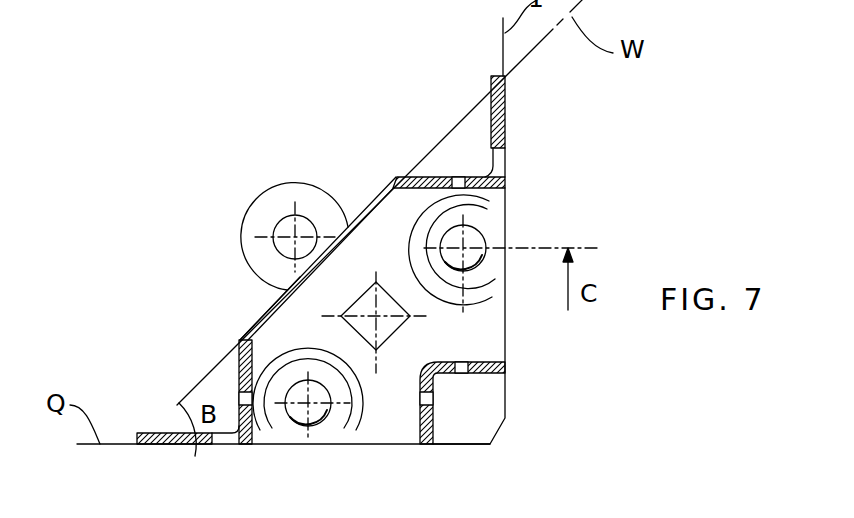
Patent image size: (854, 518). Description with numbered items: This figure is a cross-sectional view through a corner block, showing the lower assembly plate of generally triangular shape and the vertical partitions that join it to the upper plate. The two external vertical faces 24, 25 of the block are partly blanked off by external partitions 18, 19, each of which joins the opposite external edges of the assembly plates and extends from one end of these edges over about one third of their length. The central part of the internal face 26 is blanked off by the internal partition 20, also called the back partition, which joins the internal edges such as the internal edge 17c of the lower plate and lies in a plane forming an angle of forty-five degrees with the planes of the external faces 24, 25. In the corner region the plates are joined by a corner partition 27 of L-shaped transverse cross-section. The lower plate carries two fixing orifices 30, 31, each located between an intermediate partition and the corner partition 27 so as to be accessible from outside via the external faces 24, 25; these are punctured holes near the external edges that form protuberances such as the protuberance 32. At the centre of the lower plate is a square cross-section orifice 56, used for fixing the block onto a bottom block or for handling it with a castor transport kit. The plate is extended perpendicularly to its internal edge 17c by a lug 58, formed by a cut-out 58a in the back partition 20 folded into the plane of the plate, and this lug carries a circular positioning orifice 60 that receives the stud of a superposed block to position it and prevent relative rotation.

The internal edge 17c is at (455, 134).
The external partition 18 is at (157, 433).
The external partition 19 is at (505, 110).
The internal partition 20 is at (377, 200).
The external vertical face 24 is at (325, 446).
The external vertical face 25 is at (505, 228).
The internal face 26 is at (260, 323).
The corner partition 27 is at (483, 373).
The fixing orifice 30 is at (318, 387).
The fixing orifice 31 is at (462, 226).
The protuberance 32 is at (259, 17).
The square cross-section orifice 56 is at (387, 327).
The lug 58 is at (285, 197).
The cut-out 58a is at (340, 17).
The circular positioning orifice 60 is at (285, 240).